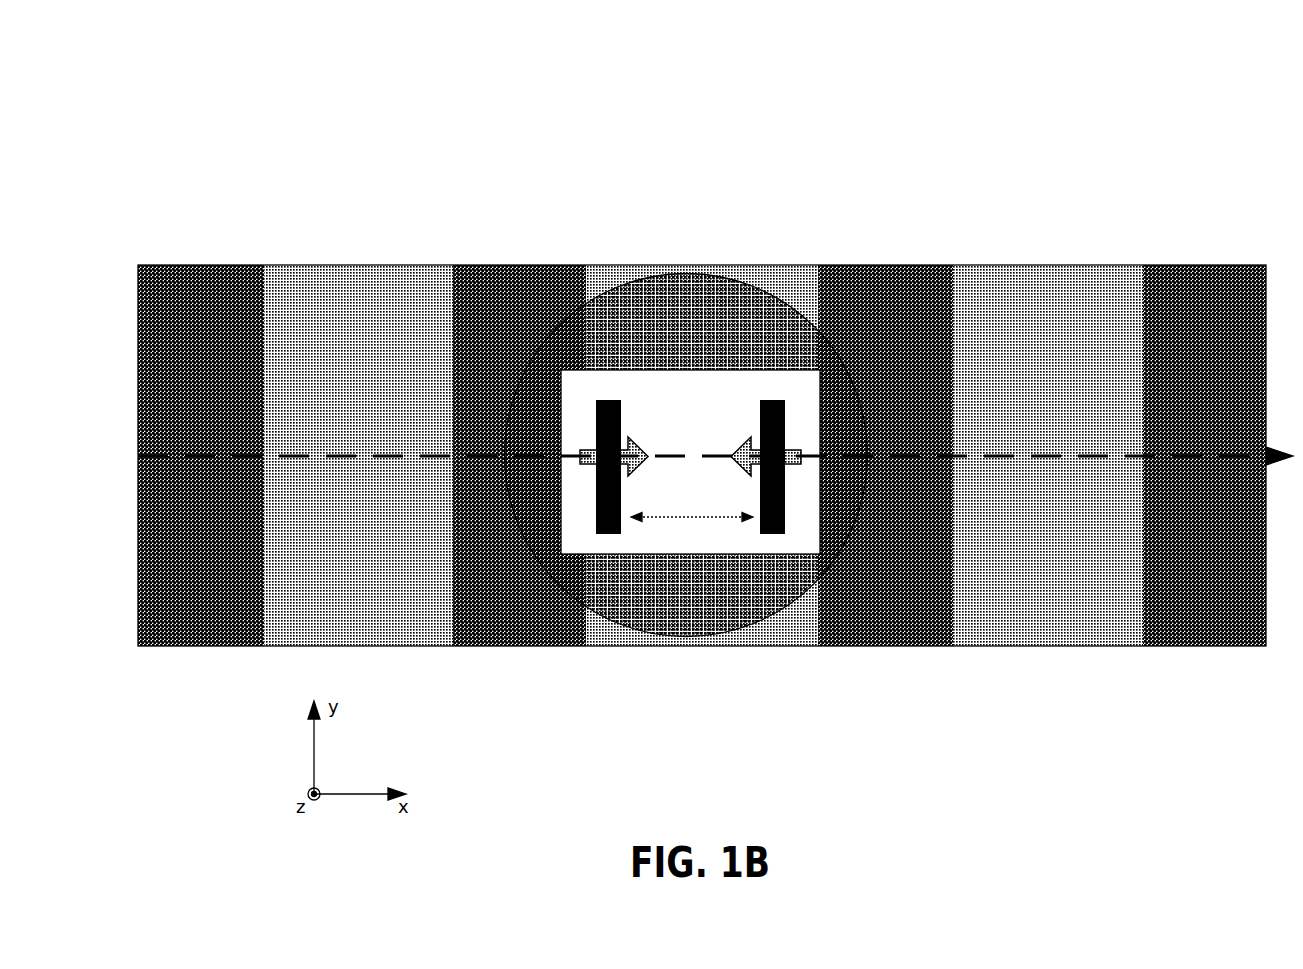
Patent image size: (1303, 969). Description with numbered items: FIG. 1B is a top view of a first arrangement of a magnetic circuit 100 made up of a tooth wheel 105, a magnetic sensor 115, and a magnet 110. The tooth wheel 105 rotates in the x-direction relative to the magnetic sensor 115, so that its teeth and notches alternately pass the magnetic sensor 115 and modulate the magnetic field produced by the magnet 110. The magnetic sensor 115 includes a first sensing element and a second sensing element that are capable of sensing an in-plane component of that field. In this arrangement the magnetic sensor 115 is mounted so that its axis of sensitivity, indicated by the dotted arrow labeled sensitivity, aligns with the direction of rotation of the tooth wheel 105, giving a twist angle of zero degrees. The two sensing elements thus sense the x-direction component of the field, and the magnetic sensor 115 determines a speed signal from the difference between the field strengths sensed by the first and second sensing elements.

The magnetic circuit 100 is at (234, 52).
The tooth wheel 105 is at (352, 258).
The magnet 110 is at (680, 629).
The magnetic sensor 115 is at (722, 222).